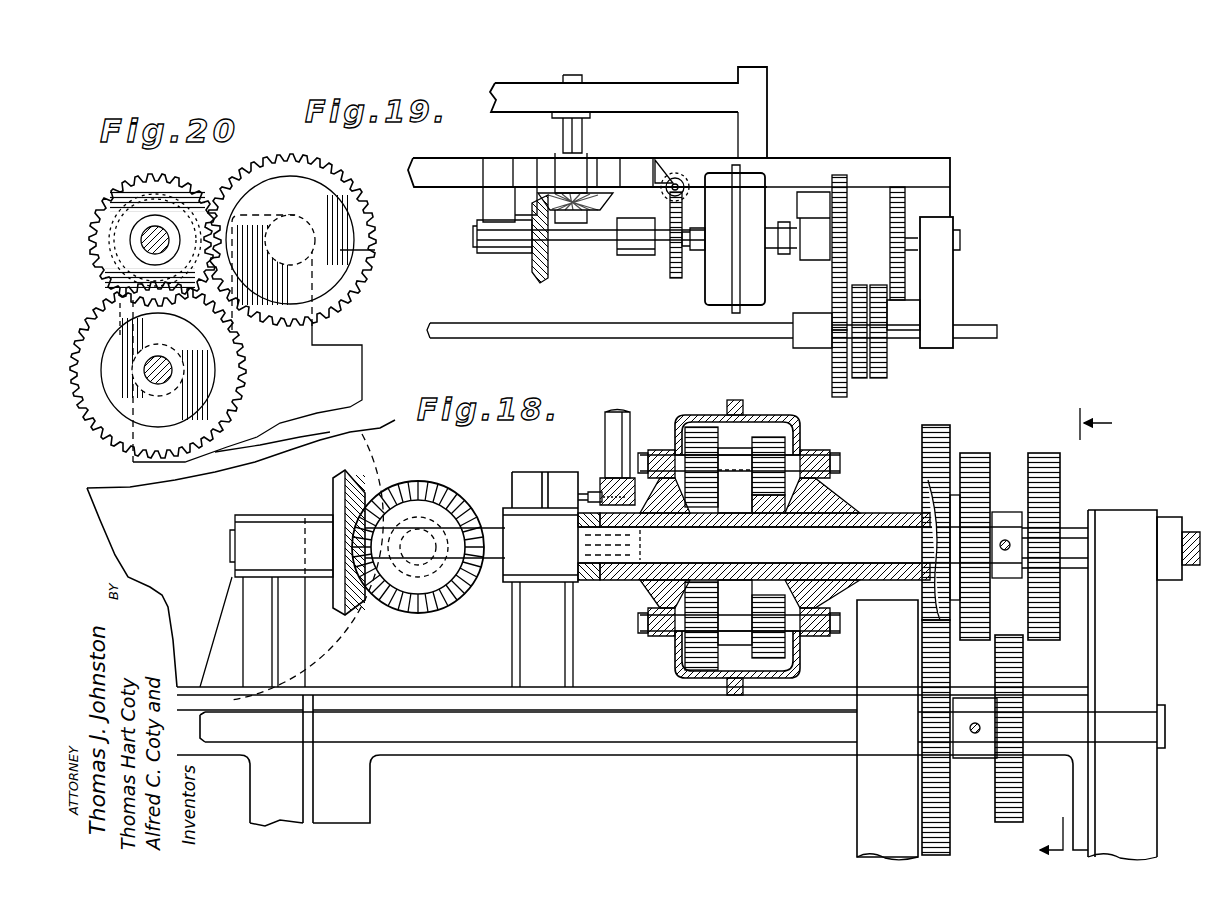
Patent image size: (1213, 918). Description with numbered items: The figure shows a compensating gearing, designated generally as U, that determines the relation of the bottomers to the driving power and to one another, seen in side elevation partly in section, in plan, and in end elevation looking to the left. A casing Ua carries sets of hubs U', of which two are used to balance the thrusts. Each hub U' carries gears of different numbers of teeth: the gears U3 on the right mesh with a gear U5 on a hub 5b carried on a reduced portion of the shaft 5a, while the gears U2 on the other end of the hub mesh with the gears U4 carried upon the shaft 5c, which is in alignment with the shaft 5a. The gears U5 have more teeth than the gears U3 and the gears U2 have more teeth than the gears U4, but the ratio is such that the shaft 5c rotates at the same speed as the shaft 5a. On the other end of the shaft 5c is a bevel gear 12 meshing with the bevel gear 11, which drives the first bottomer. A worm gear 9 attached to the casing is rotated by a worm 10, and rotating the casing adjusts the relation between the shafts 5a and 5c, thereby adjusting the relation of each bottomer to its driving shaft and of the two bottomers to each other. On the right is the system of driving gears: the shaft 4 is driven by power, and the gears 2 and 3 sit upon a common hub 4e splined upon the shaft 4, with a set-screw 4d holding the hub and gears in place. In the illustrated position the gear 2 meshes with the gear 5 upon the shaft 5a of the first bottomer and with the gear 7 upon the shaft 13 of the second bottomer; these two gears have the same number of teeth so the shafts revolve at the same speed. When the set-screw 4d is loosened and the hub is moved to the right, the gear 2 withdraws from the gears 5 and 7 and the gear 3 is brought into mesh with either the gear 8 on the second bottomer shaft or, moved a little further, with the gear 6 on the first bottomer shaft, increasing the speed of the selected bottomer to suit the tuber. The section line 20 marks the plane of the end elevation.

In FIG. 20, the gear 2 is at (112, 213).
In FIG. 19, the gear 2 is at (832, 352).
In FIG. 18, the gear 2 is at (932, 490).
In FIG. 20, the gear 3 is at (118, 182).
In FIG. 19, the gear 3 is at (860, 378).
In FIG. 18, the gear 3 is at (975, 453).
In FIG. 20, the shaft 4 is at (145, 245).
In FIG. 19, the shaft 4 is at (985, 340).
In FIG. 18, the shaft 4 is at (1072, 528).
In FIG. 18, the set-screw 4d is at (1005, 540).
In FIG. 19, the common hub 4e is at (895, 340).
In FIG. 18, the common hub 4e is at (955, 495).
In FIG. 20, the gear 5 is at (352, 235).
In FIG. 19, the gear 5 is at (842, 175).
In FIG. 18, the gear 5 is at (936, 425).
In FIG. 20, the shaft 5a is at (297, 235).
In FIG. 19, the shaft 5a is at (957, 232).
In FIG. 18, the shaft 5a is at (938, 545).
In FIG. 18, the hub 5b is at (735, 487).
In FIG. 19, the shaft 5c is at (605, 243).
In FIG. 18, the shaft 5c is at (754, 546).
In FIG. 20, the gear 6 is at (375, 250).
In FIG. 19, the gear 6 is at (897, 187).
In FIG. 18, the gear 6 is at (1042, 453).
In FIG. 20, the gear 7 is at (240, 372).
In FIG. 19, the gear 7 is at (832, 372).
In FIG. 18, the gear 7 is at (950, 790).
In FIG. 20, the gear 8 is at (110, 320).
In FIG. 19, the gear 8 is at (880, 378).
In FIG. 18, the gear 8 is at (1023, 670).
In FIG. 19, the worm gear 9 is at (672, 278).
In FIG. 18, the worm gear 9 is at (605, 470).
In FIG. 19, the worm 10 is at (686, 180).
In FIG. 18, the worm 10 is at (560, 548).
In FIG. 19, the bevel gear 11 is at (575, 225).
In FIG. 18, the bevel gear 11 is at (455, 495).
In FIG. 19, the bevel gear 12 is at (542, 273).
In FIG. 18, the bevel gear 12 is at (365, 470).
In FIG. 20, the shaft 13 is at (150, 380).
In FIG. 19, the shaft 13 is at (505, 325).
In FIG. 18, the shaft 13 is at (790, 742).
In FIG. 18, the section line 20 is at (1060, 632).
In FIG. 19, the compensating gearing arrangement U is at (679, 178).
In FIG. 18, the compensating gearing arrangement U is at (737, 524).
In FIG. 19, the casing Ua is at (756, 239).
In FIG. 18, the casing Ua is at (755, 415).
In FIG. 18, the hub U' is at (739, 546).
In FIG. 18, the gear U2 is at (700, 428).
In FIG. 18, the gear U3 is at (785, 445).
In FIG. 18, the gear U4 is at (655, 600).
In FIG. 18, the gear U5 is at (805, 500).